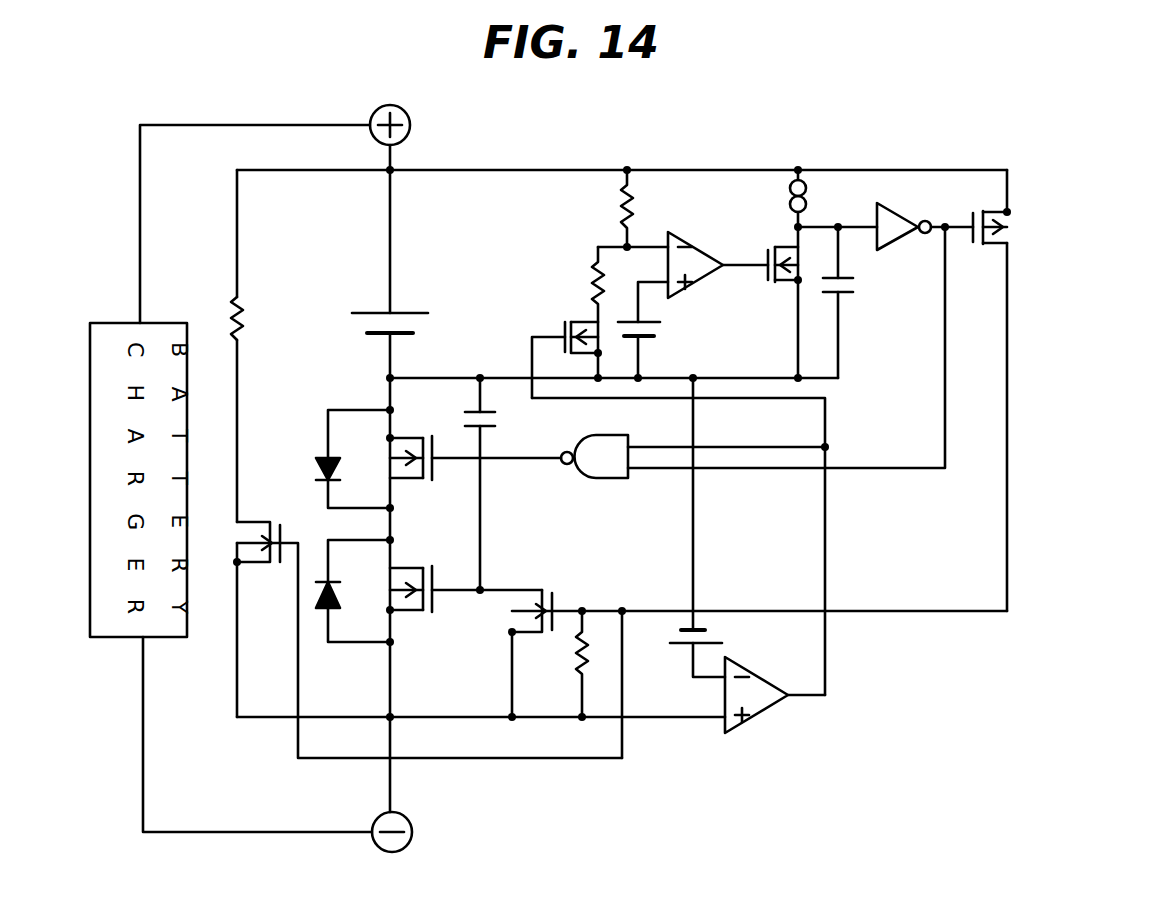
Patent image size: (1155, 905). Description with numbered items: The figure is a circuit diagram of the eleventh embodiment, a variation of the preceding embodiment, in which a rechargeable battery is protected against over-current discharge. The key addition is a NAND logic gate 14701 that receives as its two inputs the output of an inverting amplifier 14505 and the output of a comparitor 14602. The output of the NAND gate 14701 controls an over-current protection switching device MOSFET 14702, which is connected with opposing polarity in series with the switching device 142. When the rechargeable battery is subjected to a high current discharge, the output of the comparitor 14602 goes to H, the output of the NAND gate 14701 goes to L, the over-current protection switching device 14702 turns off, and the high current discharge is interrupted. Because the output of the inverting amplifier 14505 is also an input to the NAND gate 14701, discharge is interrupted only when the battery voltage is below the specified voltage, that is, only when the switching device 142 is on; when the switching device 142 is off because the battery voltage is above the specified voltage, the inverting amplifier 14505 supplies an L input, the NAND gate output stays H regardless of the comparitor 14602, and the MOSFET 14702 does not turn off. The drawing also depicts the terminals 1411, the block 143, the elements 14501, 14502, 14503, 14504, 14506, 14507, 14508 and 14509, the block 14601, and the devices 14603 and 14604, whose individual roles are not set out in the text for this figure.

The battery terminals 1411 is at (410, 127).
The protection circuit 143 is at (586, 160).
The switching device 142 is at (418, 614).
The voltage detection circuit 14501 is at (706, 148).
The comparator 14502 is at (712, 228).
The transistor 14503 is at (770, 284).
The capacitor 14504 is at (855, 290).
The inverting amplifier 14505 is at (900, 214).
The transistor 14506 is at (995, 210).
The capacitor 14507 is at (660, 326).
The constant current source 14508 is at (806, 182).
The transistor 14509 is at (580, 588).
The current detection circuit 14601 is at (880, 582).
The comparitor 14602 is at (767, 710).
The transistor 14603 is at (563, 318).
The transistor 14604 is at (288, 520).
The NAND logic gate 14701 is at (613, 478).
The over-current protection switching device MOSFET 14702 is at (413, 432).